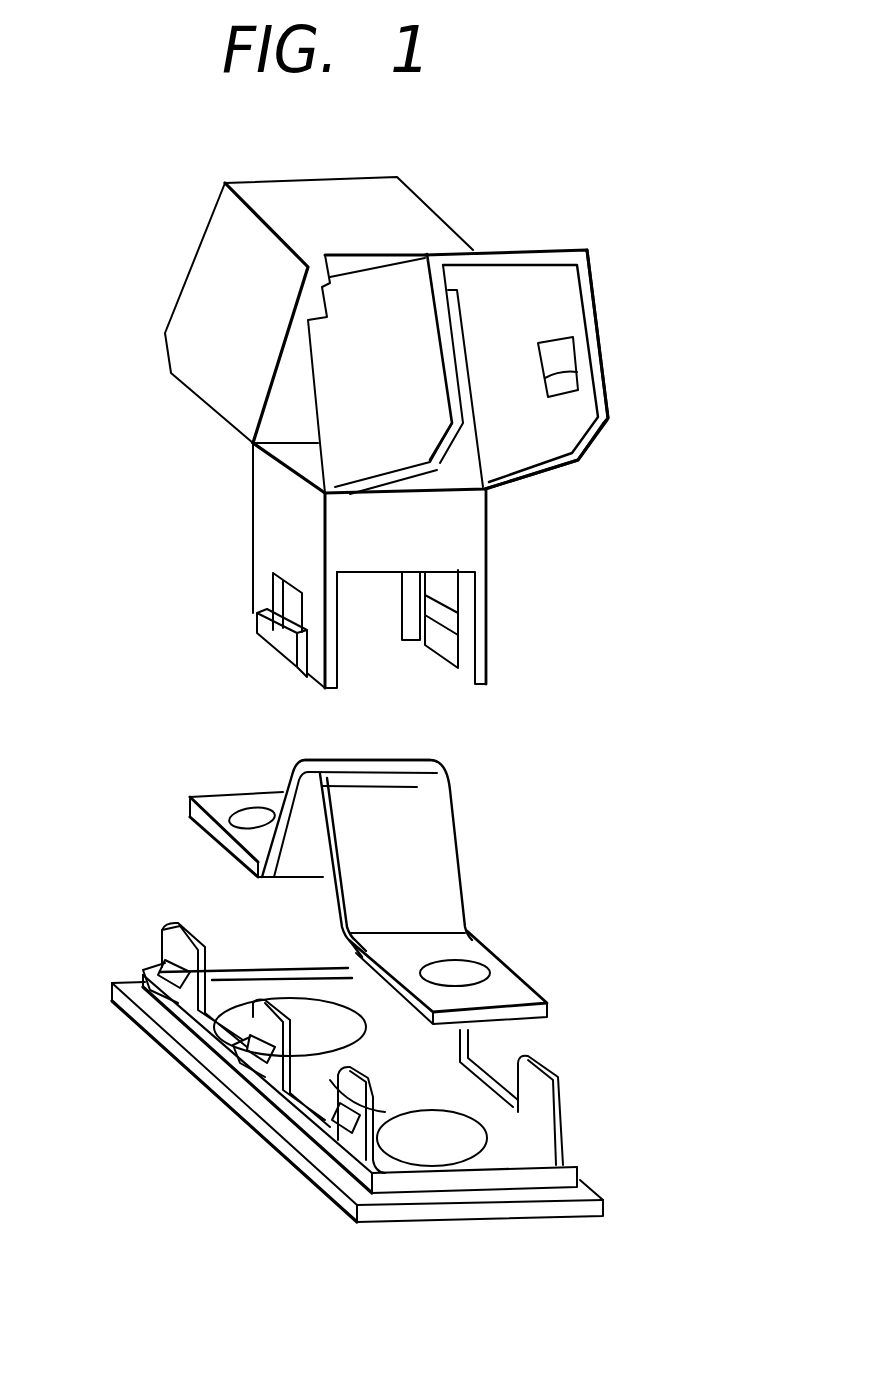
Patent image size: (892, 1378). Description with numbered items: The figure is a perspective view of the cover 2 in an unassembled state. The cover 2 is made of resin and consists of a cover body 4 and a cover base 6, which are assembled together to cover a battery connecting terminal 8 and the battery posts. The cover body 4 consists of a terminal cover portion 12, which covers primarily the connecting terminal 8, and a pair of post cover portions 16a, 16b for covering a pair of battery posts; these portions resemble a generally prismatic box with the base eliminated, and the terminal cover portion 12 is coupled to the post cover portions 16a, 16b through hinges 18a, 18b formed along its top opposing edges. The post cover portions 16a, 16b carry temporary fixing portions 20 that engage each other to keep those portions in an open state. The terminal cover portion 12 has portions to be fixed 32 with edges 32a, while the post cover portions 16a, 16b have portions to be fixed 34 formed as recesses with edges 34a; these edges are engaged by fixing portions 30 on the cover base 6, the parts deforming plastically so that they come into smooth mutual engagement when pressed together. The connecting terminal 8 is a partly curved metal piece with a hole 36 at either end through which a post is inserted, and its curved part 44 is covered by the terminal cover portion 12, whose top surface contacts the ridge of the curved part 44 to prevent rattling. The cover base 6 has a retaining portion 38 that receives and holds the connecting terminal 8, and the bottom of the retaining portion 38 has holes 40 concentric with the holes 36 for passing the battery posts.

The cover 2 is at (110, 539).
The cover body 4 is at (512, 518).
The cover base 6 is at (568, 1220).
The connecting terminal 8 is at (487, 855).
The terminal cover portion 12 is at (252, 562).
The post cover portion 16a is at (599, 300).
The post cover portion 16b is at (165, 330).
The hinge 18a is at (437, 493).
The hinge 18b is at (287, 440).
The temporary fixing portions 20 is at (408, 222).
The fixing portions 30 is at (173, 978).
The portions to be fixed 32 is at (275, 645).
The edges 32a is at (256, 612).
The portions to be fixed 34 is at (552, 360).
The edges 34a is at (545, 386).
The hole 36 is at (246, 800).
The retaining portion 38 is at (313, 1083).
The holes 40 is at (305, 1027).
The curved part 44 is at (450, 783).